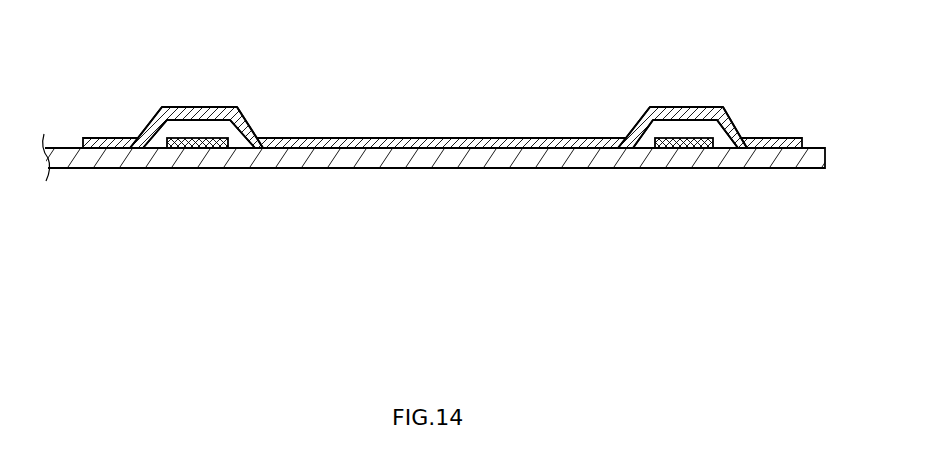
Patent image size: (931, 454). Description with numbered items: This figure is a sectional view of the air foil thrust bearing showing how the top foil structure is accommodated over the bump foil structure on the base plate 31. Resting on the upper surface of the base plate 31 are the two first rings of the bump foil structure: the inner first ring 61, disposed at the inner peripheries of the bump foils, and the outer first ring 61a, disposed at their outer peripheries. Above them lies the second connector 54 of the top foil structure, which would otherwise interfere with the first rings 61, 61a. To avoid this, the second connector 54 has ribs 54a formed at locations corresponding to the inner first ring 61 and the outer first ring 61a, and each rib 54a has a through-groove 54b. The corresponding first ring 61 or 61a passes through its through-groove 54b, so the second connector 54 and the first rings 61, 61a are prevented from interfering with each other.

The base plate 31 is at (525, 158).
The second connector 54 is at (415, 142).
The rib 54a is at (190, 108).
The through-groove 54b is at (243, 112).
The inner first ring 61 is at (197, 150).
The outer first ring 61a is at (681, 150).